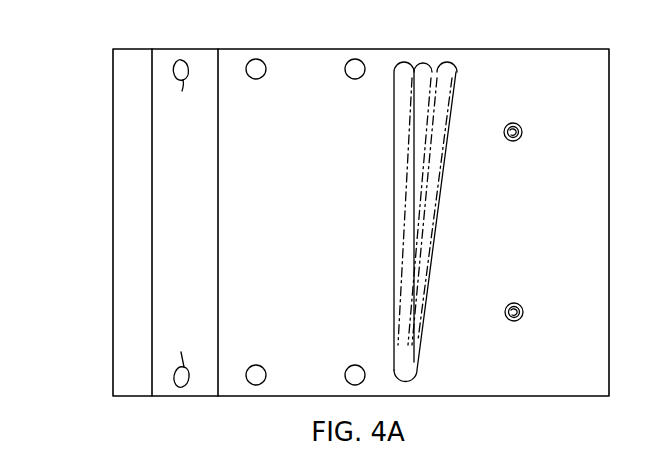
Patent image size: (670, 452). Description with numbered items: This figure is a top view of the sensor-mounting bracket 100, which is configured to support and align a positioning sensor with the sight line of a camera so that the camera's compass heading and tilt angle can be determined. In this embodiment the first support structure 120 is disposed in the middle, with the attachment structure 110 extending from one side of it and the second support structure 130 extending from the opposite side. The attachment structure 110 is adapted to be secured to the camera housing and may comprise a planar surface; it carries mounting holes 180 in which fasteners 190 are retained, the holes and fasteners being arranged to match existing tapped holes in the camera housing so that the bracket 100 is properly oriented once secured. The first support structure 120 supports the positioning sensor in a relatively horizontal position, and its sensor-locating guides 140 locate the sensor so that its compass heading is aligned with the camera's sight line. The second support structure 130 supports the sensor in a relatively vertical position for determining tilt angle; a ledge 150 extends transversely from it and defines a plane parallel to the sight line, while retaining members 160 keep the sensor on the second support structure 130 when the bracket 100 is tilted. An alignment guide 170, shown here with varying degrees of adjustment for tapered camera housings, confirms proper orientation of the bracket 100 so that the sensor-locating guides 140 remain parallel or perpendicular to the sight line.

The sensor-mounting bracket 100 is at (84, 85).
The attachment structure 110 is at (491, 223).
The first support structure 120 is at (288, 223).
The second support structure 130 is at (175, 156).
The sensor-locating guides 140 is at (345, 71).
The ledge 150 is at (133, 324).
The retaining members 160 is at (180, 224).
The alignment guide 170 is at (403, 60).
The mounting holes 180 is at (507, 138).
The fasteners 190 is at (522, 128).